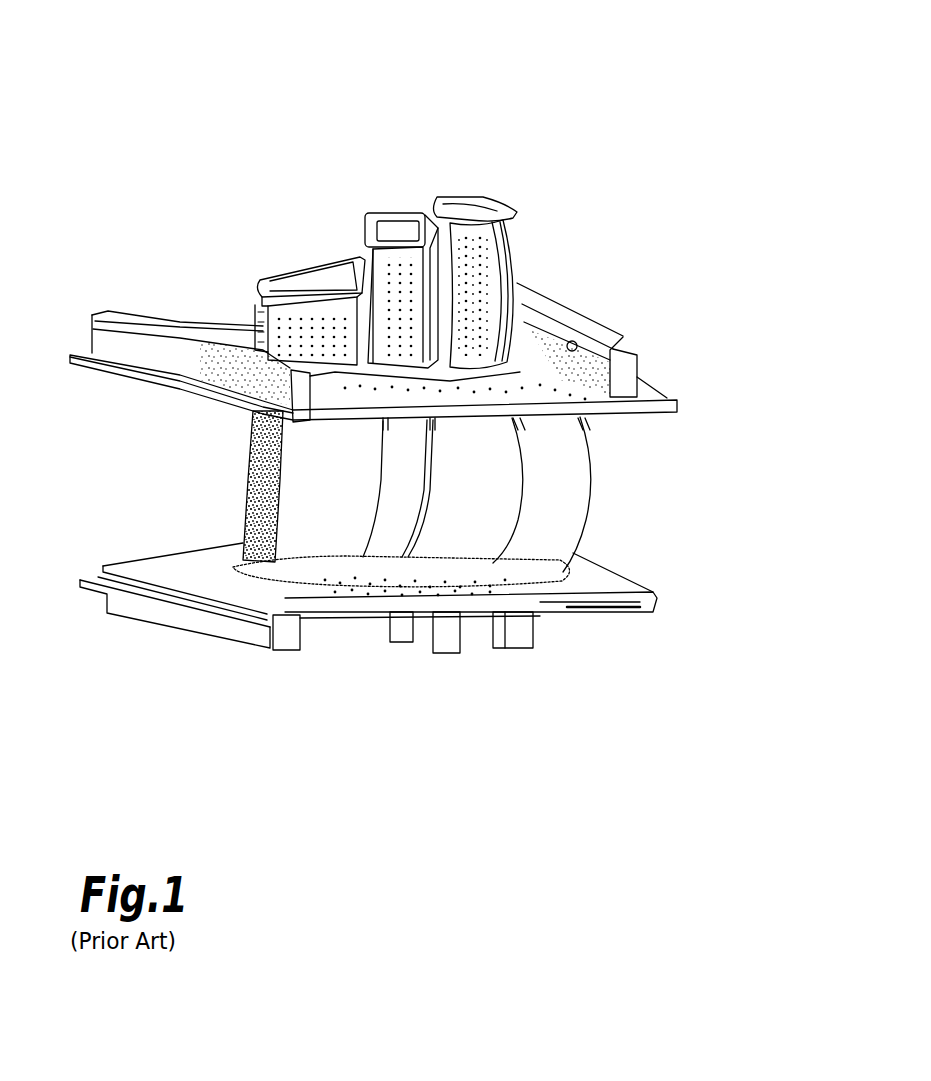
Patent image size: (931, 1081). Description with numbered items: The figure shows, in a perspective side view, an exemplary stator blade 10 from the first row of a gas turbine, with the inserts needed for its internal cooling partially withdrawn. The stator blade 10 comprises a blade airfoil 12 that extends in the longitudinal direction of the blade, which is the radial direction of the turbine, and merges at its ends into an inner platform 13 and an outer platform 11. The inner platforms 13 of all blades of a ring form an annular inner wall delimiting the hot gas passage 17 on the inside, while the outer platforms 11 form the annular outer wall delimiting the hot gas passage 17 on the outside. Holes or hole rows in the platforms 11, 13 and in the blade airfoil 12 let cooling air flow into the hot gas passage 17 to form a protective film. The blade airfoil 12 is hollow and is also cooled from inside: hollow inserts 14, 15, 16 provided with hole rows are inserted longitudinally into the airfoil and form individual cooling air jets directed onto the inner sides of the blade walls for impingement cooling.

The stator blade 10 is at (165, 107).
The outer platform 11 is at (667, 400).
The blade airfoil 12 is at (567, 495).
The inner platform 13 is at (637, 597).
The insert 14 is at (311, 262).
The insert 15 is at (402, 217).
The insert 16 is at (488, 225).
The hot gas passage 17 is at (204, 502).